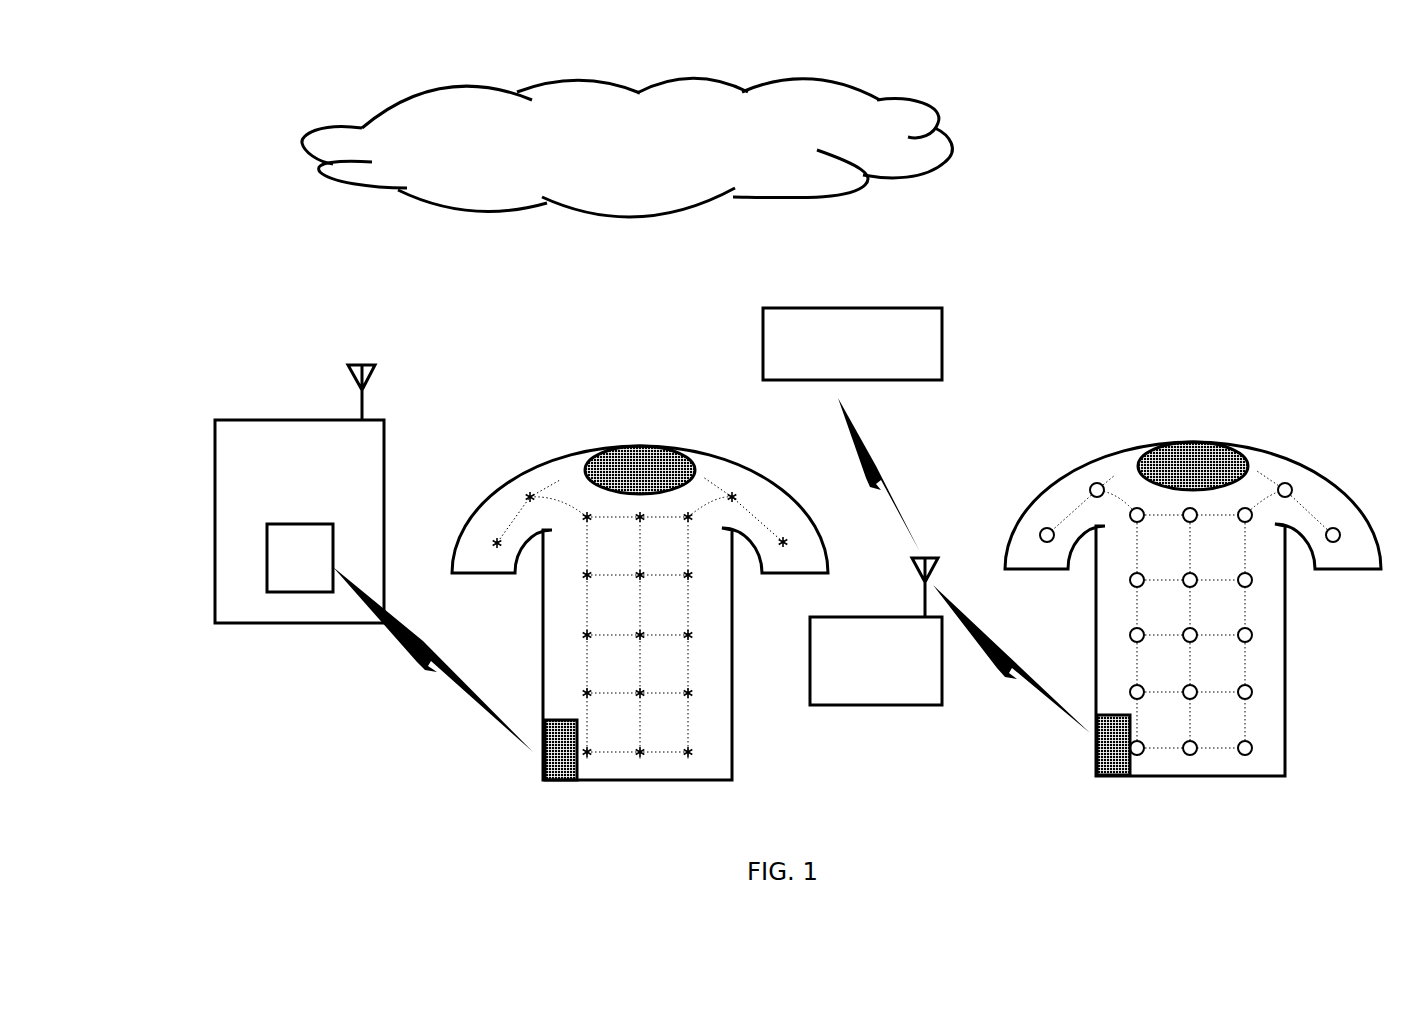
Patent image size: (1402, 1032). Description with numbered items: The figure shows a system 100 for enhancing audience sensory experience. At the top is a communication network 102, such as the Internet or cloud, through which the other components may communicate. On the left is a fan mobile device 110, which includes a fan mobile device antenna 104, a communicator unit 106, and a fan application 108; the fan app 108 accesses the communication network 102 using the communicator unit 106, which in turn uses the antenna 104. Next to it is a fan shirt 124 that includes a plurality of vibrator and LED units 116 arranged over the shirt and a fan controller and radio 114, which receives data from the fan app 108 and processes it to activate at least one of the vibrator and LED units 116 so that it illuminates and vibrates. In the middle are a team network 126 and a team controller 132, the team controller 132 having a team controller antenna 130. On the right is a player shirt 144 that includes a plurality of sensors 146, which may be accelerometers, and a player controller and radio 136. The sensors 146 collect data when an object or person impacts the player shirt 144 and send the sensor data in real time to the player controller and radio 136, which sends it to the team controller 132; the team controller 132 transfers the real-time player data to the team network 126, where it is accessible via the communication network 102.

The system 100 is at (795, 462).
The communication network 102 is at (627, 147).
The fan mobile device antenna 104 is at (325, 368).
The communicator unit 106 is at (299, 521).
The fan application 108 is at (300, 558).
The fan mobile device 110 is at (299, 549).
The fan controller and radio 114 is at (557, 755).
The vibrator and light-emitting diode units 116 is at (529, 490).
The fan shirt 124 is at (621, 611).
The team network 126 is at (852, 344).
The team controller antenna 130 is at (938, 560).
The team controller 132 is at (876, 661).
The player controller and radio 136 is at (1095, 757).
The player shirt 144 is at (1173, 610).
The sensors 146 is at (1286, 466).